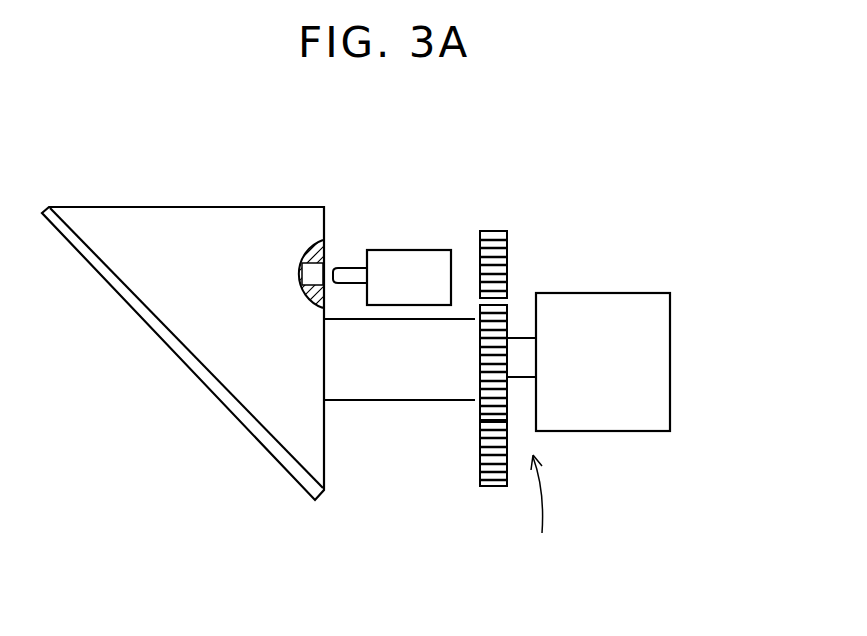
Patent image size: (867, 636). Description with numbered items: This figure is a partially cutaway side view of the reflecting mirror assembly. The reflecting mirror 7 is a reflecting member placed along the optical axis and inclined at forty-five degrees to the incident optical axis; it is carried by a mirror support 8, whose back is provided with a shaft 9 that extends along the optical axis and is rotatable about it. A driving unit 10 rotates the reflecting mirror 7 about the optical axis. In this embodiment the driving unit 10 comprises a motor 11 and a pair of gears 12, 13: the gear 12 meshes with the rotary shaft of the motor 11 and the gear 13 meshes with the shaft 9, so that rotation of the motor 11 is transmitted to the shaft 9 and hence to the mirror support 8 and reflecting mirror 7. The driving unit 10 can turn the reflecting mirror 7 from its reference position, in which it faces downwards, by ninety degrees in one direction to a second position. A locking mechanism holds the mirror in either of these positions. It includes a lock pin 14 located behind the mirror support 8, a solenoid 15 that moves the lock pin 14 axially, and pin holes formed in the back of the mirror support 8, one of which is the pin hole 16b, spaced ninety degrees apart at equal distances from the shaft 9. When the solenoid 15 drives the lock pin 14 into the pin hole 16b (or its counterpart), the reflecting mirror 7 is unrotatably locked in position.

The reflecting mirror 7 is at (165, 342).
The mirror support 8 is at (204, 207).
The shaft 9 is at (373, 382).
The driving unit 10 is at (546, 515).
The motor 11 is at (612, 422).
The gear 12 is at (490, 367).
The gear 13 is at (497, 270).
The lock pin 14 is at (350, 270).
The solenoid 15 is at (415, 249).
The pin hole 16b is at (310, 262).